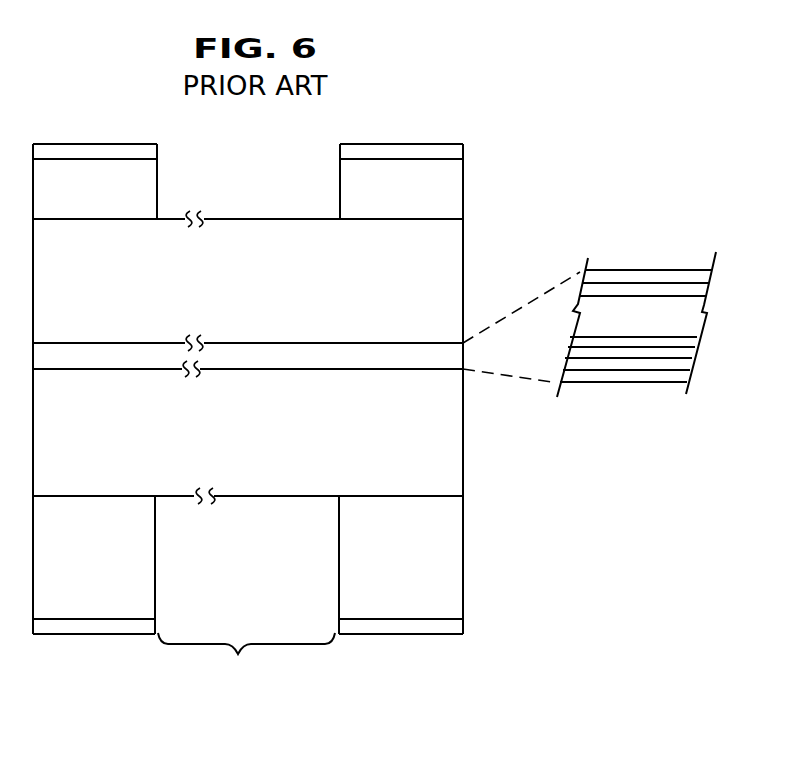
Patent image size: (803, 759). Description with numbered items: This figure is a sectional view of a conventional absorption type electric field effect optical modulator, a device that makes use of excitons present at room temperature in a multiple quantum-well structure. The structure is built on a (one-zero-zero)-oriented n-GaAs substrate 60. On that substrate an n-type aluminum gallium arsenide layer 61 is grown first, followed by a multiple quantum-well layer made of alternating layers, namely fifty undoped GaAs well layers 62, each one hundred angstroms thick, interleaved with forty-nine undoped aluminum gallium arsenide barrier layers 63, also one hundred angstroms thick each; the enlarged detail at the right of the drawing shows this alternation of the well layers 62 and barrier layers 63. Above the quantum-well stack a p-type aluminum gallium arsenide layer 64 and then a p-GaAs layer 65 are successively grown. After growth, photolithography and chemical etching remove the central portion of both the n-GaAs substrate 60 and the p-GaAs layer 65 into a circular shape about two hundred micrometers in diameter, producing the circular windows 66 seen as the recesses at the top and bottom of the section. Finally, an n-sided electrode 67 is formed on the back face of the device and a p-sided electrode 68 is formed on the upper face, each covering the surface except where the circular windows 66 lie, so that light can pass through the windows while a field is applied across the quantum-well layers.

The n-GaAs substrate 60 is at (446, 558).
The n-Al0.3Ga0.7As layer 61 is at (449, 470).
The well layer 62 is at (704, 276).
The barrier layer 63 is at (700, 291).
The p-Al0.3Ga0.7As layer 64 is at (443, 269).
The p-GaAs layer 65 is at (453, 191).
The circular window 66 is at (238, 654).
The n-sided electrode 67 is at (452, 628).
The p-sided electrode 68 is at (452, 151).